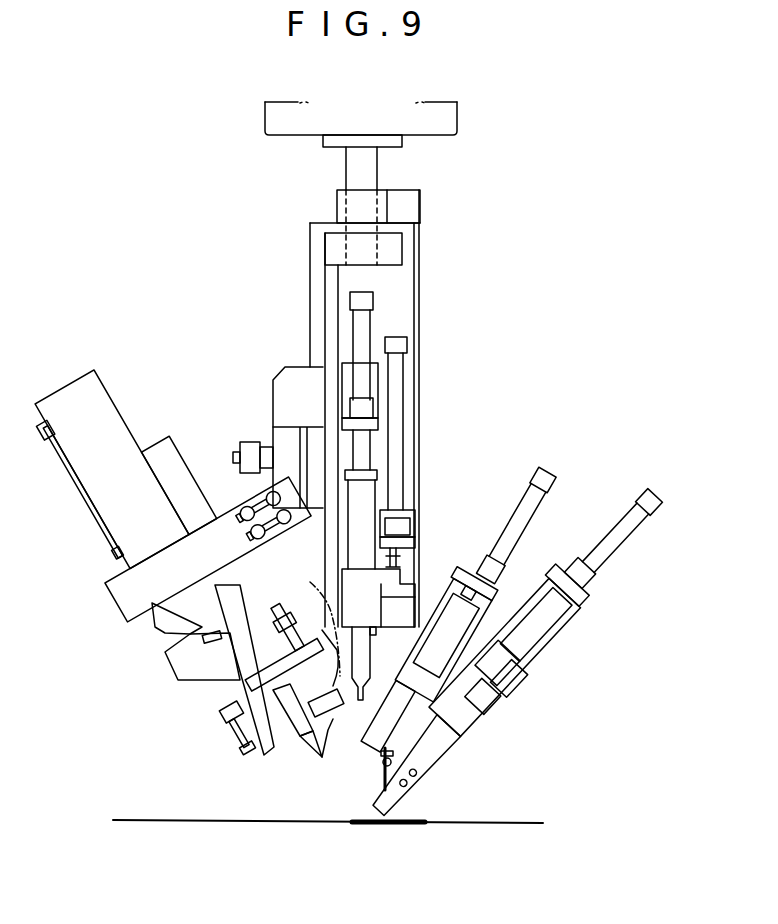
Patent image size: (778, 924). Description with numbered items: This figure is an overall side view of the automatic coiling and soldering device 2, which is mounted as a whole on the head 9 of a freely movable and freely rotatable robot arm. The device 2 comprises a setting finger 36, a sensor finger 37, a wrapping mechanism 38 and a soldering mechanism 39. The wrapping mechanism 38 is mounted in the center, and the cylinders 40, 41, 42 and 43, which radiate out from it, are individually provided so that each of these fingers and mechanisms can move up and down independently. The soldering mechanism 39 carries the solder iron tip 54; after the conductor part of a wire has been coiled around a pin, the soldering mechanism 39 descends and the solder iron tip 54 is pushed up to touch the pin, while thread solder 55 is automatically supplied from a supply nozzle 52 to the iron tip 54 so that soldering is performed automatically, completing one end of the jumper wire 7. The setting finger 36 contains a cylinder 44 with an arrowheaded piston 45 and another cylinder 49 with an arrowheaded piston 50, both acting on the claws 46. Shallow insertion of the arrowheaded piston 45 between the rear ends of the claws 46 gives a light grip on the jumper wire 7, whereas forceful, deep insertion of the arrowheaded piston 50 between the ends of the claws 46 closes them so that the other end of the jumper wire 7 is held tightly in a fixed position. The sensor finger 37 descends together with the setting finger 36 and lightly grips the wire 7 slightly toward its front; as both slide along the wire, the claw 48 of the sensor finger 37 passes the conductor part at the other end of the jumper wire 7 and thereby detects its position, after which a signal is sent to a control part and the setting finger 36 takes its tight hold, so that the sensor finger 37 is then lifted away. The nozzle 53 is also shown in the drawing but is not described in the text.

The automatic coiling and soldering device 2 is at (512, 217).
The jumper wire 7 is at (410, 814).
The head 9 is at (458, 125).
The setting finger 36 is at (556, 629).
The sensor finger 37 is at (462, 566).
The wrapping mechanism 38 is at (422, 395).
The soldering mechanism 39 is at (190, 668).
The cylinder 40 is at (612, 550).
The cylinder 41 is at (530, 503).
The cylinder 42 is at (363, 325).
The cylinder 43 is at (182, 467).
The cylinder 44 is at (510, 648).
The arrowheaded piston 45 is at (465, 705).
The claws 46 is at (391, 800).
The claw 48 is at (380, 770).
The cylinder 49 is at (510, 680).
The arrowheaded piston 50 is at (483, 700).
The supply nozzle 52 is at (330, 735).
The nozzle 53 is at (360, 700).
The solder iron tip 54 is at (313, 740).
The thread solder 55 is at (318, 618).